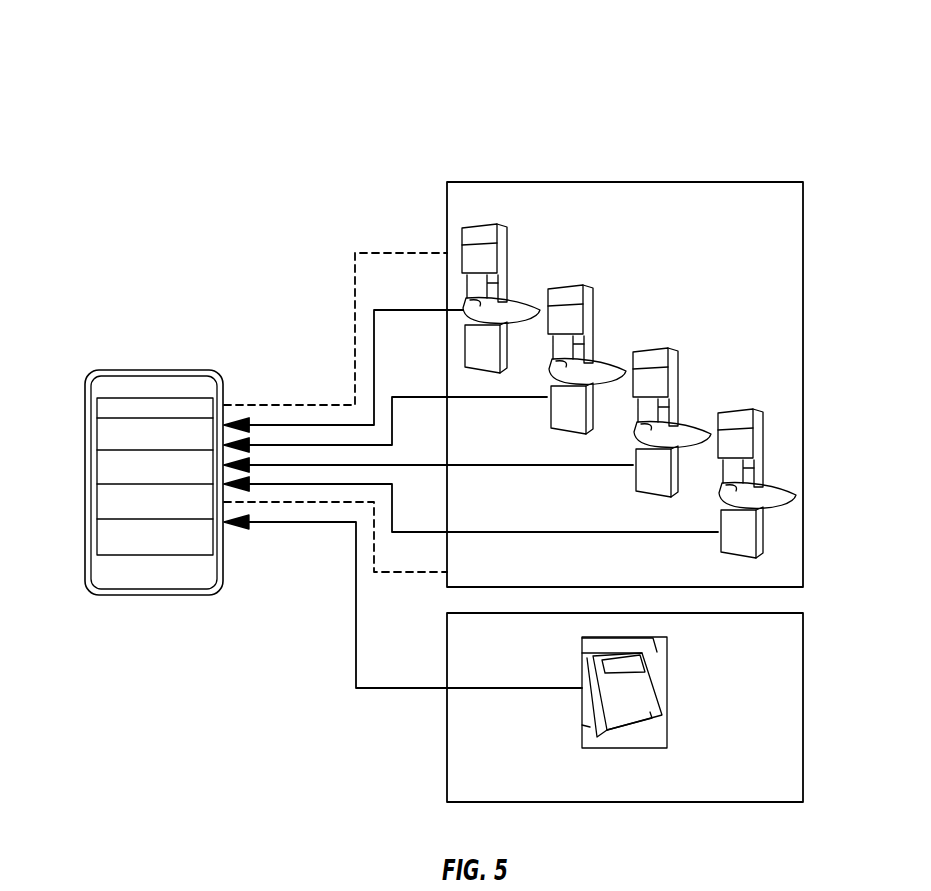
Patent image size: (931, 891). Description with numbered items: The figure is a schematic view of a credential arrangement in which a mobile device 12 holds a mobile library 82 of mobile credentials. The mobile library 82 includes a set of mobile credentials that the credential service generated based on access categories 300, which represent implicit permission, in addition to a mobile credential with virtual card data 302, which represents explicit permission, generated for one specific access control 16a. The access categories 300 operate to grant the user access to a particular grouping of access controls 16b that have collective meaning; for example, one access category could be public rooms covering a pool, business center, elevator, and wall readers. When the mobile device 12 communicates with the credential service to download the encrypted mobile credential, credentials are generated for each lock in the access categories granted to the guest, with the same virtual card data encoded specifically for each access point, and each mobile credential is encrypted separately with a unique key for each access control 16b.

The mobile device 12 is at (100, 328).
The mobile library 82 is at (160, 370).
The access categories 300 is at (455, 146).
The mobile credential with virtual card data 302 is at (358, 735).
The access controls 16b is at (760, 266).
The access control 16a is at (760, 704).